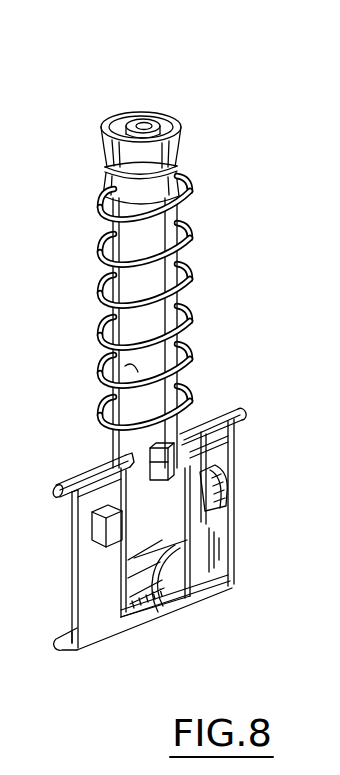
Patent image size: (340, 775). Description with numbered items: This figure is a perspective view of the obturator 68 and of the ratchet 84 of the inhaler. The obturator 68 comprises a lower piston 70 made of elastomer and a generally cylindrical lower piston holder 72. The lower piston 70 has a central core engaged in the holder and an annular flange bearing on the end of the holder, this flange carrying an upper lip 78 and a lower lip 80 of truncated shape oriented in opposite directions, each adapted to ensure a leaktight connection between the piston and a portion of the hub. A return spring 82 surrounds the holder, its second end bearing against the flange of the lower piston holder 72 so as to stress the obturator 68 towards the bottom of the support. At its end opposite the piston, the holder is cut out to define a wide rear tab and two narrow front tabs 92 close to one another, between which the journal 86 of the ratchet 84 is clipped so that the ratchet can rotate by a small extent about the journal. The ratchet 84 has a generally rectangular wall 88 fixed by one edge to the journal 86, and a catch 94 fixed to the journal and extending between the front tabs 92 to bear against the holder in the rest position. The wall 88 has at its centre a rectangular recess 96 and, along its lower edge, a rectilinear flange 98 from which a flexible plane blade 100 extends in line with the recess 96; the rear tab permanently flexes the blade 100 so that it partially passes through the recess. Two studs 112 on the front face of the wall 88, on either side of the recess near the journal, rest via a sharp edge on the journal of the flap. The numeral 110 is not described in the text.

The obturator 68 is at (203, 187).
The lower piston 70 is at (148, 123).
The lower piston holder 72 is at (188, 303).
The upper lip 78 is at (190, 134).
The lower lip 80 is at (188, 170).
The return spring 82 is at (125, 368).
The ratchet 84 is at (216, 557).
The journal 86 is at (222, 408).
The wall 88 is at (77, 597).
The front tabs 92 is at (110, 465).
The catch 94 is at (240, 443).
The rectangular recess 96 is at (166, 606).
The rectilinear flange 98 is at (63, 646).
The flexible plane blade 100 is at (120, 560).
The housing 110 is at (30, 744).
The studs 112 is at (238, 490).